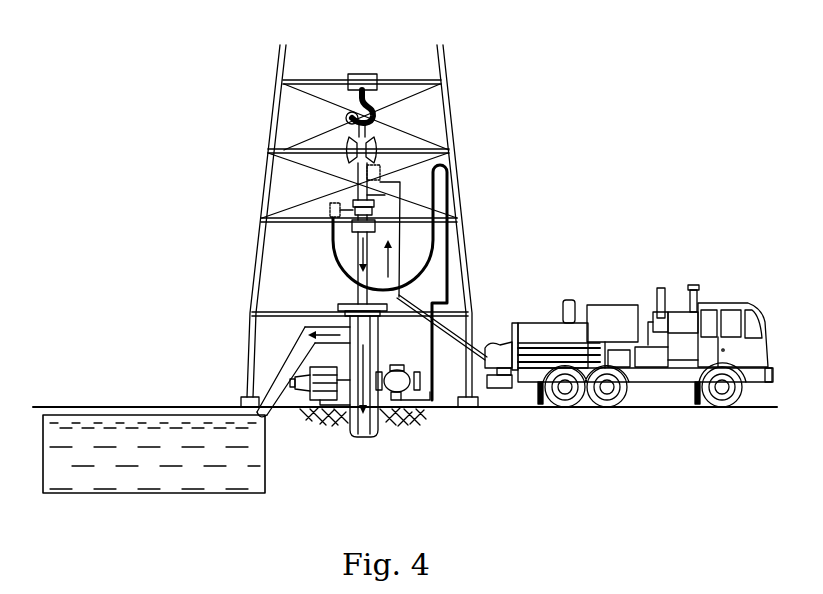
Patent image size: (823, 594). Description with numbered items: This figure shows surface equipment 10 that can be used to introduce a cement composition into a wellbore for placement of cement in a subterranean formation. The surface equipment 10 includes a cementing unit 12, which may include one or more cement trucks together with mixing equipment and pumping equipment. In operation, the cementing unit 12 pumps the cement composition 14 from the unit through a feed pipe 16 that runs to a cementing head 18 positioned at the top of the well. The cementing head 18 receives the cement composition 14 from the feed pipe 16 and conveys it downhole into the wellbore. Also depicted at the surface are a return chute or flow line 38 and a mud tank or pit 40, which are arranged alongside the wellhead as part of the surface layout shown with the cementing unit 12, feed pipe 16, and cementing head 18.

The surface equipment 10 is at (405, 288).
The cementing unit 12 is at (652, 392).
The cement composition 14 is at (357, 252).
The feed pipe 16 is at (443, 323).
The cementing head 18 is at (400, 138).
The return chute / flow line 38 is at (280, 368).
The mud tank / pit 40 is at (158, 495).